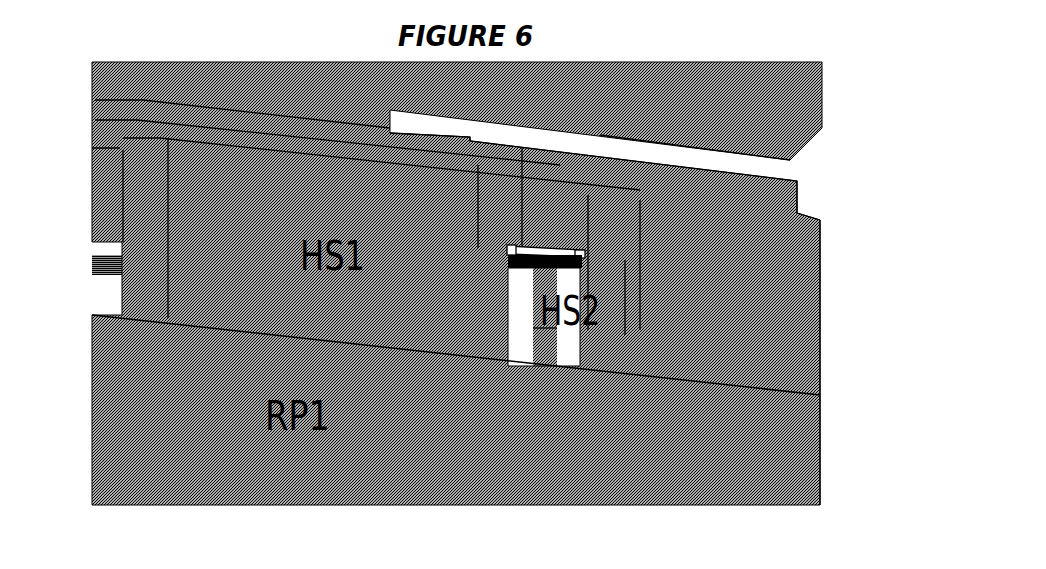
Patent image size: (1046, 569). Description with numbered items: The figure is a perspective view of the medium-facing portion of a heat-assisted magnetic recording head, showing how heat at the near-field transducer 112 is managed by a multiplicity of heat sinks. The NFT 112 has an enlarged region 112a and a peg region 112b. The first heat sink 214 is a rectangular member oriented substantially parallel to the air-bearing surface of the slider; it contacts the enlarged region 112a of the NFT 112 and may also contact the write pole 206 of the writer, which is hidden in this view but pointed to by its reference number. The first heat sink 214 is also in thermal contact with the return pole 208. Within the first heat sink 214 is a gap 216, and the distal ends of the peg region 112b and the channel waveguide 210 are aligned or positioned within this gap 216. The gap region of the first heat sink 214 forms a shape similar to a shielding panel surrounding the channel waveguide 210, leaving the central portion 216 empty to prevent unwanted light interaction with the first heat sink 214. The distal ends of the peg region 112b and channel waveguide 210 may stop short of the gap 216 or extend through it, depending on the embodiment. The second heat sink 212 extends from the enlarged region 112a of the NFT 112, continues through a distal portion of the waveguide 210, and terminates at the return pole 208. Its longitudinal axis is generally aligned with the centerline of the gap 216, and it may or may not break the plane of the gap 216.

The near-field transducer 112 is at (522, 247).
The enlarged region 112a is at (510, 250).
The peg region 112b is at (568, 252).
The write pole 206 is at (590, 192).
The return pole 208 is at (95, 268).
The channel waveguide 210 is at (510, 260).
The second heat sink 212 is at (533, 318).
The first heat sink 214 is at (795, 350).
The gap 216 is at (570, 333).